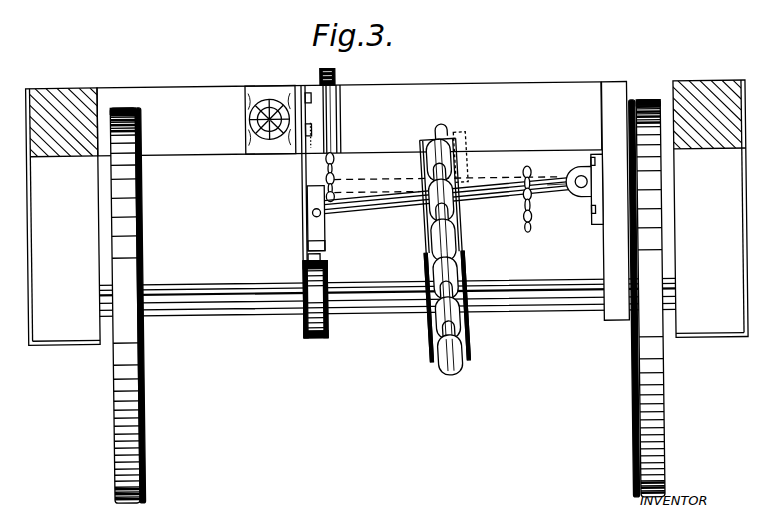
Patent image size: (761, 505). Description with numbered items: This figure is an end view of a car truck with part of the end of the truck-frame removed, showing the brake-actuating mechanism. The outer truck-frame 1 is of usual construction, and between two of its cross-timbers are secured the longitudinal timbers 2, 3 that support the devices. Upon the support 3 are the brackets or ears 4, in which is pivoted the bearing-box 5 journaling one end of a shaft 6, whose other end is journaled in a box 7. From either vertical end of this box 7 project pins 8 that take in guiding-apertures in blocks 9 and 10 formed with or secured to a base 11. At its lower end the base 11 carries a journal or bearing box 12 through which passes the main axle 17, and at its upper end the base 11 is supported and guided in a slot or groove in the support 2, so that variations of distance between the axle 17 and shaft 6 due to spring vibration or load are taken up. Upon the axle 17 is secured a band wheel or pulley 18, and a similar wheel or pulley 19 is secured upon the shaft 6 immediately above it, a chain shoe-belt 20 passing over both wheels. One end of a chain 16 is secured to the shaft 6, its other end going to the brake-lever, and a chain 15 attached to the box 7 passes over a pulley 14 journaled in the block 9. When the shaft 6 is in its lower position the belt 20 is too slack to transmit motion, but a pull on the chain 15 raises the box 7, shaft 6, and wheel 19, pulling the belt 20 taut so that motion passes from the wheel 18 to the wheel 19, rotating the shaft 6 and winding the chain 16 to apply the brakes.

The outer truck-frame 1 is at (349, 119).
The longitudinal timber 2 is at (265, 84).
The longitudinal timber 3 is at (615, 200).
The brackets or ears 4 is at (597, 216).
The bearing-box 5 is at (578, 192).
The shaft 6 is at (558, 194).
The box 7 is at (316, 218).
The pins 8 is at (310, 173).
The block 9 is at (313, 120).
The block 10 is at (320, 249).
The base 11 is at (303, 230).
The journal or bearing box 12 is at (315, 299).
The pulley 14 is at (340, 82).
The chain 15 is at (329, 68).
The chain 16 is at (527, 234).
The axle 17 is at (236, 280).
The band wheel or pulley 18 is at (462, 271).
The wheel or pulley 19 is at (462, 181).
The chain shoe-belt 20 is at (461, 350).